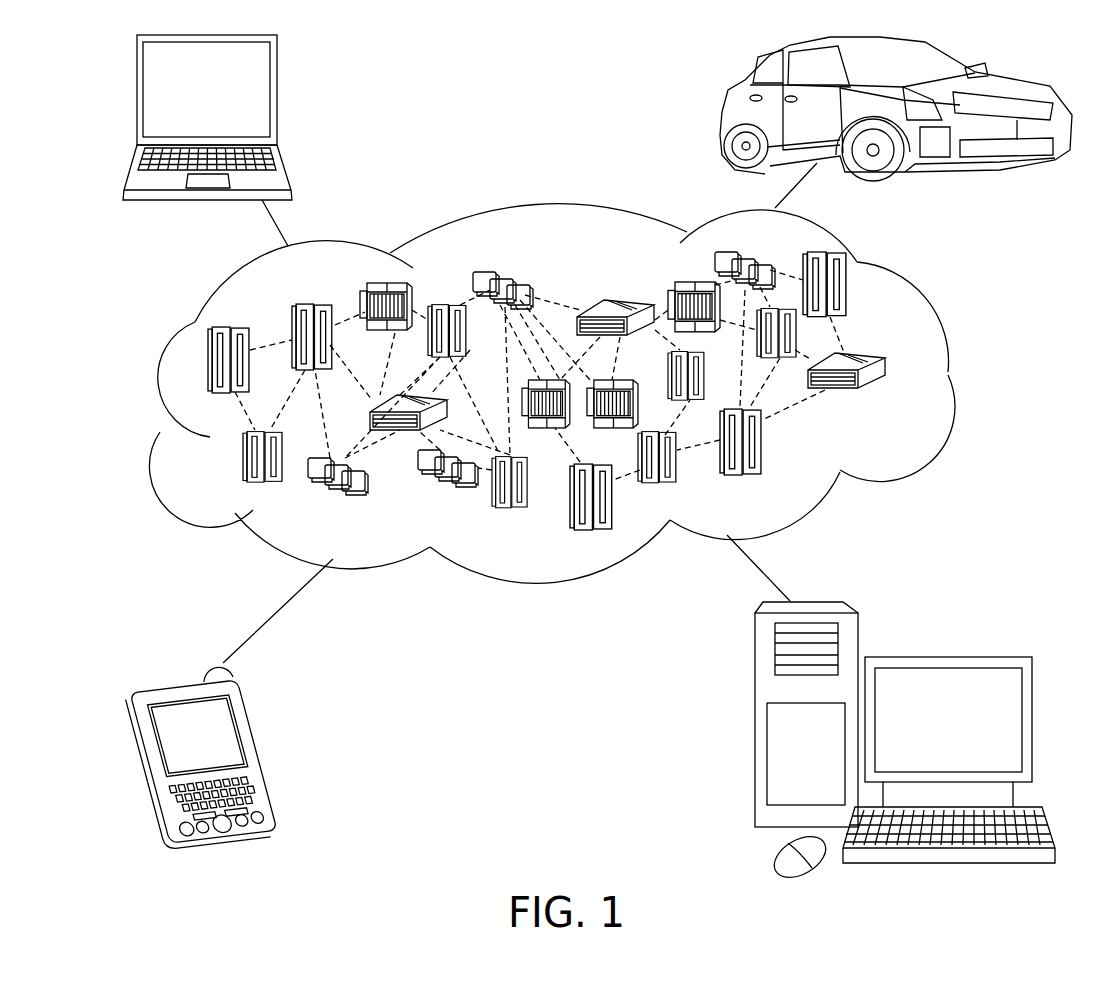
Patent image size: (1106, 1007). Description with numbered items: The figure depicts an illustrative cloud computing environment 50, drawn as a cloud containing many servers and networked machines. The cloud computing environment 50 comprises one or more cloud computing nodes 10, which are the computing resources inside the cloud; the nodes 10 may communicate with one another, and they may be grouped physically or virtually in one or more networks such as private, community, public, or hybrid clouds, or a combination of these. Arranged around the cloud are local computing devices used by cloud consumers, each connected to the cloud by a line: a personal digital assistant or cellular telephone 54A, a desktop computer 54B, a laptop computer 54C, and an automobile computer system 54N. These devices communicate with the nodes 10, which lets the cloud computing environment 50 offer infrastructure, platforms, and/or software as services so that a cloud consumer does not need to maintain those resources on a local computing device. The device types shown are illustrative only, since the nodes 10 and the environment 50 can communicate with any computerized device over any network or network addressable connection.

The cloud computing node 10 is at (892, 401).
The cloud computing environment 50 is at (948, 368).
The personal digital assistant (PDA) or cellular telephone 54A is at (267, 748).
The desktop computer 54B is at (945, 656).
The laptop computer 54C is at (277, 95).
The automobile computer system 54N is at (722, 112).